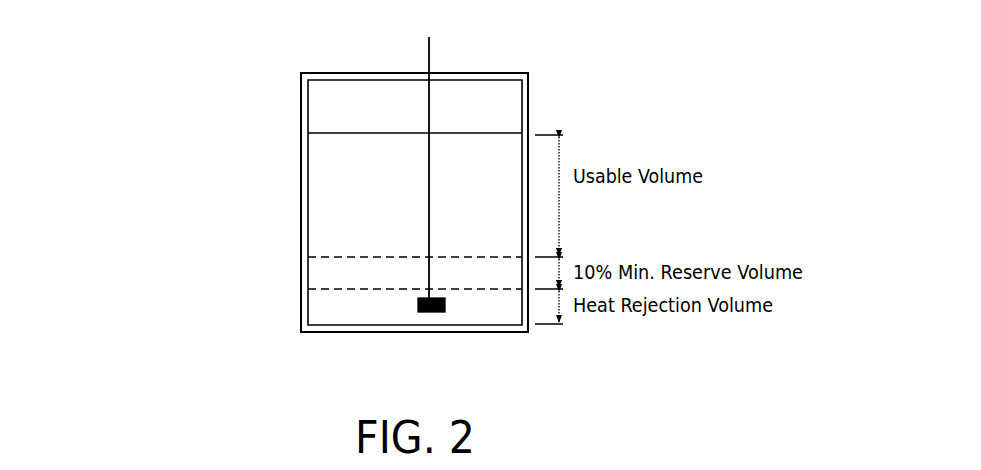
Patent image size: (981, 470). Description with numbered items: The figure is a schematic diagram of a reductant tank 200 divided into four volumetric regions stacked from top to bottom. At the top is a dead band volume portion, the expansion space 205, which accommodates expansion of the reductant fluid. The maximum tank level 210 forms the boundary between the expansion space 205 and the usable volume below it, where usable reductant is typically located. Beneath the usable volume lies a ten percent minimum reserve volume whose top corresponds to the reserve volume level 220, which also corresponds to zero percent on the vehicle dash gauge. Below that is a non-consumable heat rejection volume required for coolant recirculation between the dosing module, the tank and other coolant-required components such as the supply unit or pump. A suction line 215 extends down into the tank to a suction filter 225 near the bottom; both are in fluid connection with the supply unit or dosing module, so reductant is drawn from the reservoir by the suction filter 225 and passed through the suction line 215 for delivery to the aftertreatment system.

The reductant tank 200 is at (538, 72).
The expansion space 205 is at (362, 99).
The maximum tank level 210 is at (362, 134).
The suction line 215 is at (429, 199).
The reserve volume level 220 is at (362, 257).
The suction filter 225 is at (418, 306).